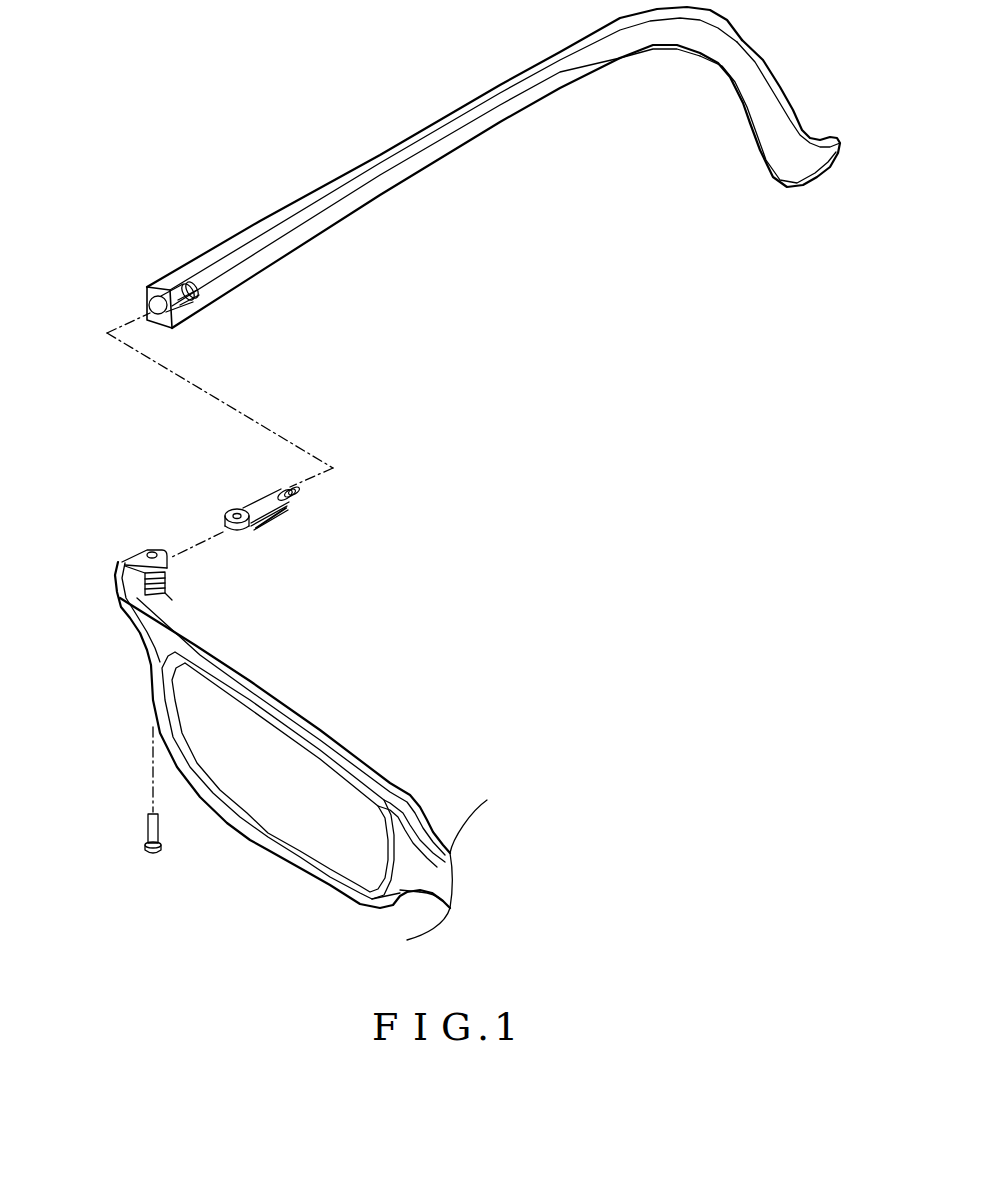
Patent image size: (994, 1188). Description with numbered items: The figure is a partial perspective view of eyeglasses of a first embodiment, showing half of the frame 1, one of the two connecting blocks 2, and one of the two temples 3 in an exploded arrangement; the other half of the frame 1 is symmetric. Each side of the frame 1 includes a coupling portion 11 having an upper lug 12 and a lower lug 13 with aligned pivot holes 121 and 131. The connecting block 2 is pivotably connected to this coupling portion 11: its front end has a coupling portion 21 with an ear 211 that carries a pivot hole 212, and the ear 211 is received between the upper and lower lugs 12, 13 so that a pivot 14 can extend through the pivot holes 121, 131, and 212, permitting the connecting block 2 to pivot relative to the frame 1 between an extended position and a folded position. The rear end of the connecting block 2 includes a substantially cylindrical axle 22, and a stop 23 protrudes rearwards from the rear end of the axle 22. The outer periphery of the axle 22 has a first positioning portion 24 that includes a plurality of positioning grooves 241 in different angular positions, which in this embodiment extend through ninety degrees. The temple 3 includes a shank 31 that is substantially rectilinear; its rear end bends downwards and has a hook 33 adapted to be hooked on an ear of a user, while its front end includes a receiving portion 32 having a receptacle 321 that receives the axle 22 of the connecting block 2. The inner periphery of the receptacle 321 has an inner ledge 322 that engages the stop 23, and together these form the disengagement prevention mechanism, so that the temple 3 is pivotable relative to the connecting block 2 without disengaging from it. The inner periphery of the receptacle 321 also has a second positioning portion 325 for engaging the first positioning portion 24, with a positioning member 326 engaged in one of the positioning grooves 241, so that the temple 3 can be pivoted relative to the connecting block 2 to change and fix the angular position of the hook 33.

The frame 1 is at (268, 701).
The coupling portion 11 is at (113, 575).
The upper lug 12 is at (137, 515).
The pivot hole 121 is at (152, 550).
The lower lug 13 is at (187, 594).
The pivot hole 131 is at (168, 580).
The pivot 14 is at (148, 830).
The connecting block 2 is at (285, 495).
The coupling portion 21 is at (241, 507).
The ear 211 is at (251, 528).
The pivot hole 212 is at (240, 511).
The axle 22 is at (263, 500).
The stop 23 is at (292, 487).
The first positioning portion 24 is at (307, 545).
The positioning grooves 241 is at (270, 515).
The temple 3 is at (444, 194).
The shank 31 is at (337, 185).
The receiving portion 32 is at (172, 285).
The receptacle 321 is at (153, 301).
The inner ledge 322 is at (205, 297).
The second positioning portion 325 is at (152, 324).
The positioning member 326 is at (189, 317).
The hook 33 is at (768, 135).